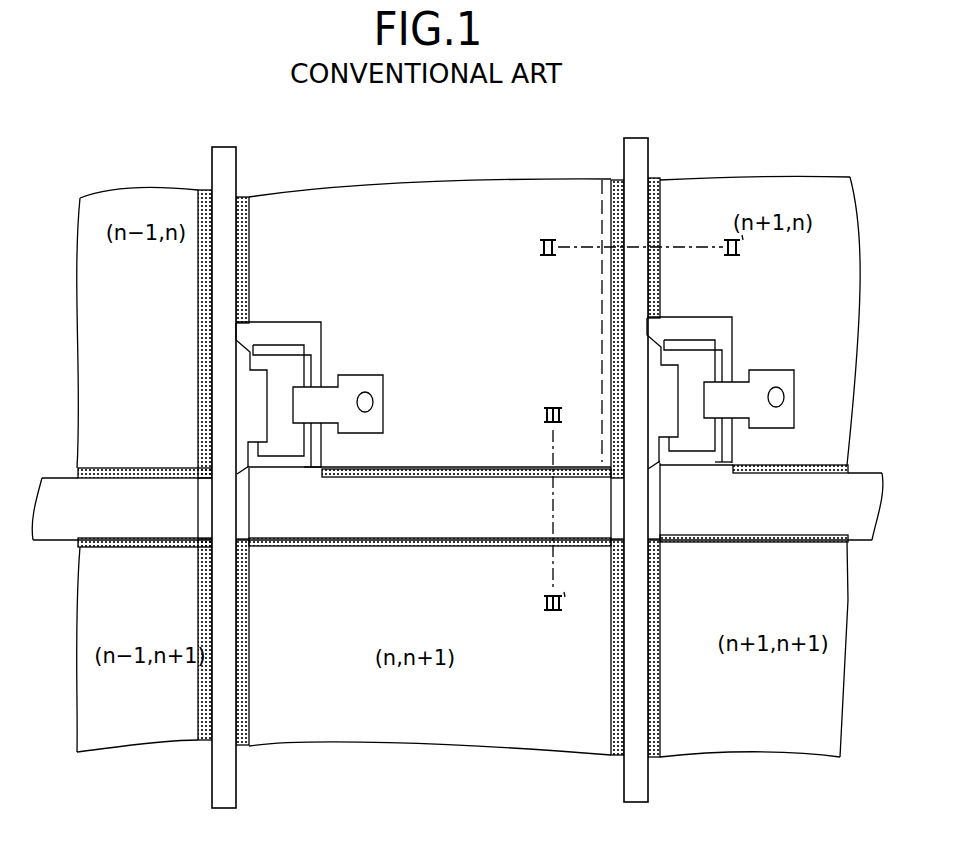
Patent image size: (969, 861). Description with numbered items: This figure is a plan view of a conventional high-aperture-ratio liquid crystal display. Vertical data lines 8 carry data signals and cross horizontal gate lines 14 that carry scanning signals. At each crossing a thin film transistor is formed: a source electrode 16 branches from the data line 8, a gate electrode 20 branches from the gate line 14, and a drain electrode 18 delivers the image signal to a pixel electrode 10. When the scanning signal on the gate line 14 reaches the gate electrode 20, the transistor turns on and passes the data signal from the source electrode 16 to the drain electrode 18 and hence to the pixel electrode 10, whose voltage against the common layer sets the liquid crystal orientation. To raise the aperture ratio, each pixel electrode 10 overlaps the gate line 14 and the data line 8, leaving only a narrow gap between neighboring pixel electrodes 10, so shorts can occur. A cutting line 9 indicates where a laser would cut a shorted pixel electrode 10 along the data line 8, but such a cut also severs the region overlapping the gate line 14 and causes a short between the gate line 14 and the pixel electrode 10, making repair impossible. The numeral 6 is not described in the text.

The data line 6 is at (237, 795).
The data line 8 is at (203, 757).
The cutting line 9 is at (601, 238).
The pixel electrode 10 is at (430, 245).
The gate line 14 is at (173, 466).
The source electrode 16 is at (268, 353).
The drain electrode 18 is at (370, 375).
The gate electrode 20 is at (303, 342).